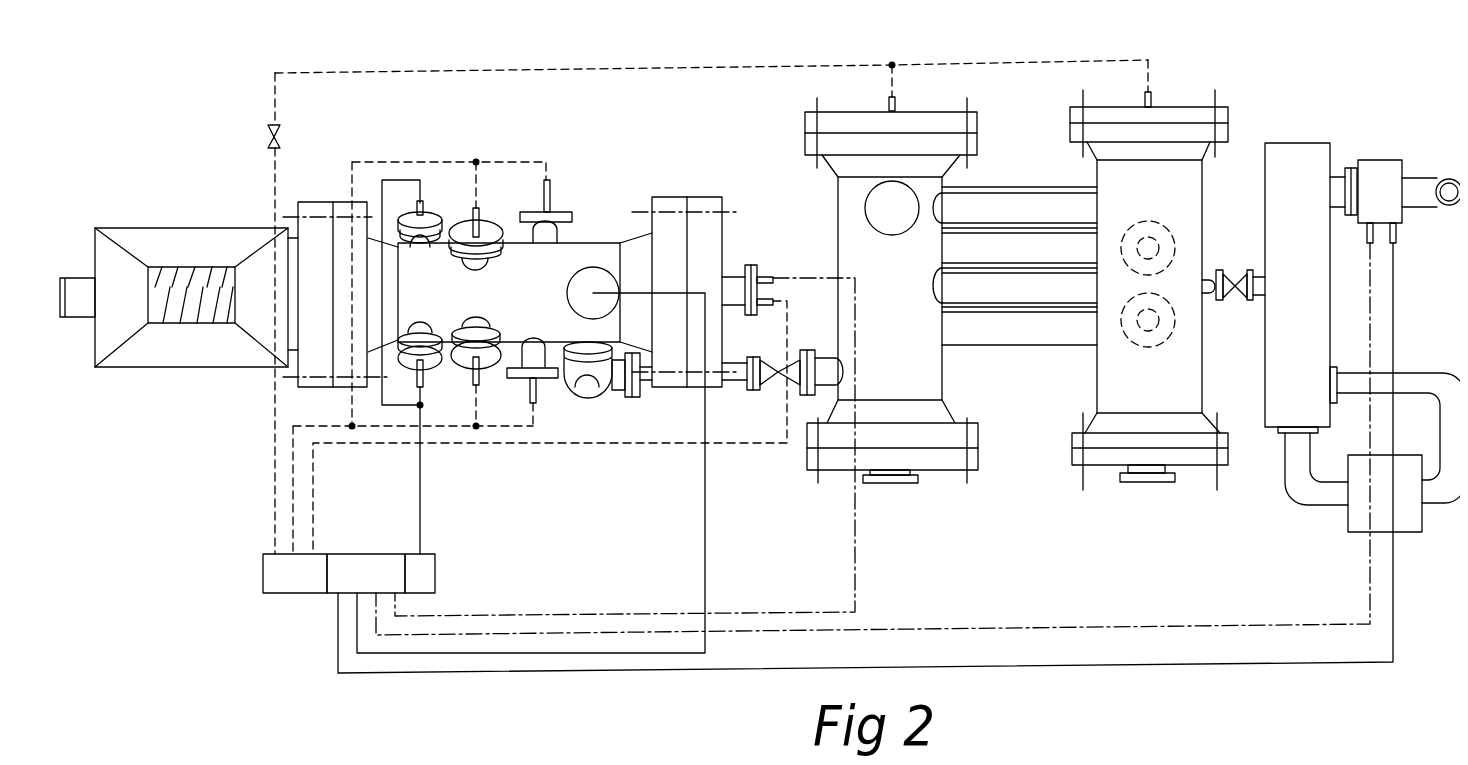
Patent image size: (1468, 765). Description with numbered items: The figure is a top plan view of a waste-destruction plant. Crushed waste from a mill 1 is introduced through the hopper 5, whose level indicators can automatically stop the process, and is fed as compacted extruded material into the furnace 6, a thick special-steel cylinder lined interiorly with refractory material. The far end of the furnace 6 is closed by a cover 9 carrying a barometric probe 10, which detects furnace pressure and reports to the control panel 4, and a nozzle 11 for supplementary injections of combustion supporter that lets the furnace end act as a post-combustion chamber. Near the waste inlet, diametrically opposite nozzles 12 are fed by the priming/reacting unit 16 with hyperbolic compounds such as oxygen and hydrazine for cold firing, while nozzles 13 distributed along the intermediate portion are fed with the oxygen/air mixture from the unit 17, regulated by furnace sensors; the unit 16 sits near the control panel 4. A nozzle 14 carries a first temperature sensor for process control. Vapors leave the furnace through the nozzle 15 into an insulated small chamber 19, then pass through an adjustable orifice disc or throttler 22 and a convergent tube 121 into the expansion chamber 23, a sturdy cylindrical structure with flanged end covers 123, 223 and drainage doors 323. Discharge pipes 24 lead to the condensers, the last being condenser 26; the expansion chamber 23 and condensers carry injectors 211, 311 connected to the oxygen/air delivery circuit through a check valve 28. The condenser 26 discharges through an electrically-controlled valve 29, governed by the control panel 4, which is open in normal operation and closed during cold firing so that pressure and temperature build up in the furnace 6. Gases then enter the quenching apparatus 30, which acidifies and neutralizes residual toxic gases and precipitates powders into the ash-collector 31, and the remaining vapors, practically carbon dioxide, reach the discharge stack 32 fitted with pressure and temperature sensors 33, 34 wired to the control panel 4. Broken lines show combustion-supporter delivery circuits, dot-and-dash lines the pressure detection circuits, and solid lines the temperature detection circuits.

The mill 1 is at (163, 367).
The control panel 4 is at (333, 588).
The hopper 5 is at (170, 240).
The furnace 6 is at (590, 241).
The cover 9 is at (707, 200).
The barometric probe 10 is at (767, 274).
The nozzle 11 is at (768, 308).
The nozzles 12 is at (436, 213).
The nozzles 13 is at (520, 213).
The nozzle 14 is at (567, 293).
The nozzle 15 is at (573, 340).
The priming/reacting unit 16 is at (433, 582).
The unit 17 is at (288, 582).
The small chamber 19 is at (589, 393).
The adjustable orifice disc or throttler 22 is at (749, 384).
The expansion chamber 23 is at (838, 210).
The discharge pipes 24 is at (1058, 346).
The condenser 26 is at (1096, 170).
The check valve 28 is at (267, 128).
The electrically-controlled valve 29 is at (1232, 290).
The quenching apparatus 30 is at (1291, 140).
The ash-collector 31 is at (1347, 523).
The discharge stack 32 is at (1377, 159).
The pressure sensor 33 is at (1368, 241).
The temperature sensor 34 is at (1396, 238).
The convergent tube 121 is at (768, 376).
The flanged end cover 123 is at (975, 112).
The injector 211 is at (889, 100).
The flanged end cover 223 is at (943, 463).
The injector 311 is at (1155, 100).
The drainage doors 323 is at (897, 223).